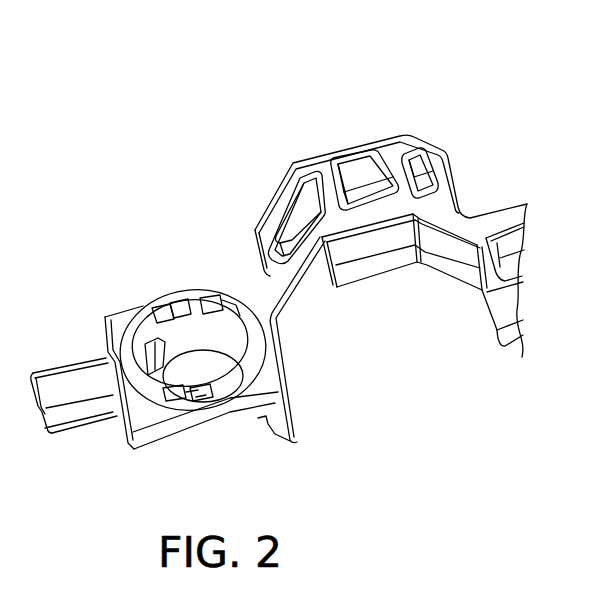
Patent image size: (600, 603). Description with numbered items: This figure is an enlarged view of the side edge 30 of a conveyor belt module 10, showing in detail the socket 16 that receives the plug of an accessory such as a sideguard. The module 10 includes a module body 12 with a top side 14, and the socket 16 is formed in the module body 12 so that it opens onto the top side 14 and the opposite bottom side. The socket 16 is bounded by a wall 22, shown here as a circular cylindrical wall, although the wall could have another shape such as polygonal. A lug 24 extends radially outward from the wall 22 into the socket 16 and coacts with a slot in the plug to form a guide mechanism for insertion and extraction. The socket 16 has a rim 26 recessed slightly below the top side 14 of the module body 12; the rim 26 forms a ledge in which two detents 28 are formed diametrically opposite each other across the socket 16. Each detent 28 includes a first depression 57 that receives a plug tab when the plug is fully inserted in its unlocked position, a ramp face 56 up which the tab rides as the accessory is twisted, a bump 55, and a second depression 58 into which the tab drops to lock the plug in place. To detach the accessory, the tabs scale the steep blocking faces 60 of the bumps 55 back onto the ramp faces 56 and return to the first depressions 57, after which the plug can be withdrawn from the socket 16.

The module 10 is at (355, 104).
The module body 12 is at (317, 295).
The top side 14 is at (272, 297).
The socket 16 is at (179, 344).
The wall 22 is at (284, 394).
The lug 24 is at (177, 386).
The rim 26 is at (242, 318).
The detents 28 is at (200, 300).
The side edge 30 is at (113, 316).
The bumps 55 is at (198, 397).
The ramp faces 56 is at (200, 392).
The first depression 57 is at (212, 302).
The second depressions 58 is at (162, 316).
The blocking faces 60 is at (200, 391).